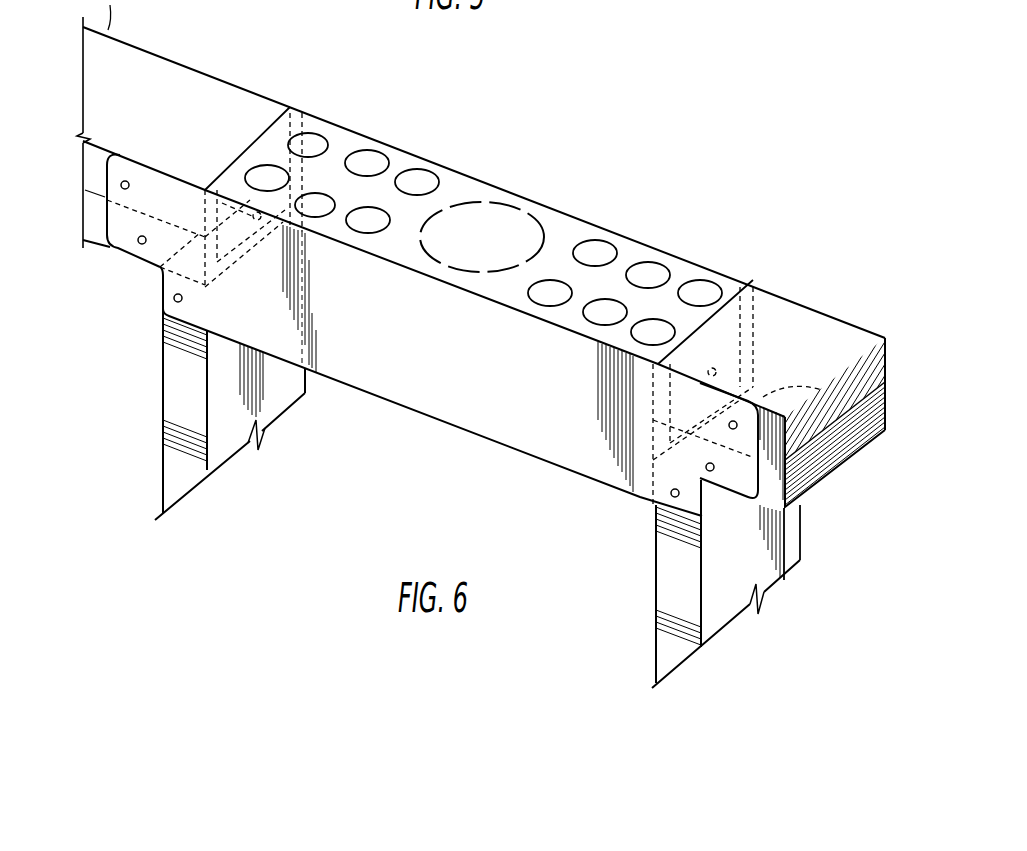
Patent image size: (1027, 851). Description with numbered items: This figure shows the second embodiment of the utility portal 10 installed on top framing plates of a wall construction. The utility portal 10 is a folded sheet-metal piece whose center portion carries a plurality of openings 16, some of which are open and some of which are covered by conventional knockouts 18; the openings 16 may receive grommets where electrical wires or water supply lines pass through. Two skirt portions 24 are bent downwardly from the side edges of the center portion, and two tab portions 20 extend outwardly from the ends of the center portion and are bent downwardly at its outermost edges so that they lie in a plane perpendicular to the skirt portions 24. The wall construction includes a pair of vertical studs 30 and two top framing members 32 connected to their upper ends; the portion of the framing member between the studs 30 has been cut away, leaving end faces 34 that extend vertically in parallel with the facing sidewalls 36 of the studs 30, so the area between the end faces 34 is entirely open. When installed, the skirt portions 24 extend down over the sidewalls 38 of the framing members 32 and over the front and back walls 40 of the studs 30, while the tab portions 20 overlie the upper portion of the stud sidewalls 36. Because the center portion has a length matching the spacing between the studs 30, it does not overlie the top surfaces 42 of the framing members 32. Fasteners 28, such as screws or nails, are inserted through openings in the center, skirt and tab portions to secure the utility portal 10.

The utility portal 10 is at (690, 158).
The openings 16 is at (372, 213).
The knockouts 18 is at (420, 182).
The tab portions 20 is at (306, 155).
The skirt portions 24 is at (465, 405).
The fasteners 28 is at (770, 377).
The studs 30 is at (162, 440).
The top framing members 32 is at (93, 220).
The end faces 34 is at (297, 130).
The sidewalls 36 is at (227, 440).
The sidewalls 38 is at (93, 167).
The front and back walls 40 is at (258, 214).
The top surface 42 is at (153, 77).